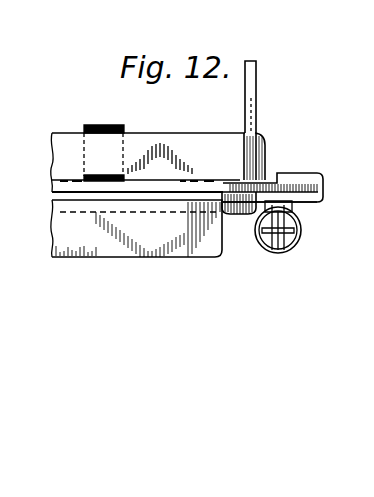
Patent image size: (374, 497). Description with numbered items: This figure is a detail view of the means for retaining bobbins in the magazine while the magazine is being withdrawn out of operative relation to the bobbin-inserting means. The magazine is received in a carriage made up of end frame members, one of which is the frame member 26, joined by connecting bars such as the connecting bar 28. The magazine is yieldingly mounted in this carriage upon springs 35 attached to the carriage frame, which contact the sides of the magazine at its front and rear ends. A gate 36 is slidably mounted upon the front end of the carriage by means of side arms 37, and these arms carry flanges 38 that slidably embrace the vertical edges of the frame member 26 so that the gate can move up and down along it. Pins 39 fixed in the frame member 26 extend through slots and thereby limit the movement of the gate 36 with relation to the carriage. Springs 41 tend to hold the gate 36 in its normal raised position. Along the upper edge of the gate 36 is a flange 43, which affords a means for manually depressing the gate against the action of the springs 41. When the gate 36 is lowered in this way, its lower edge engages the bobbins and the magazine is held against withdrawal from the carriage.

The end frame member 26 is at (203, 150).
The connecting bar 28 is at (254, 82).
The spring 35 is at (100, 125).
The gate 36 is at (54, 203).
The side arm 37 is at (297, 204).
The flange 38 is at (305, 178).
The pin 39 is at (281, 250).
The spring 41 is at (272, 249).
The flange 43 is at (146, 258).